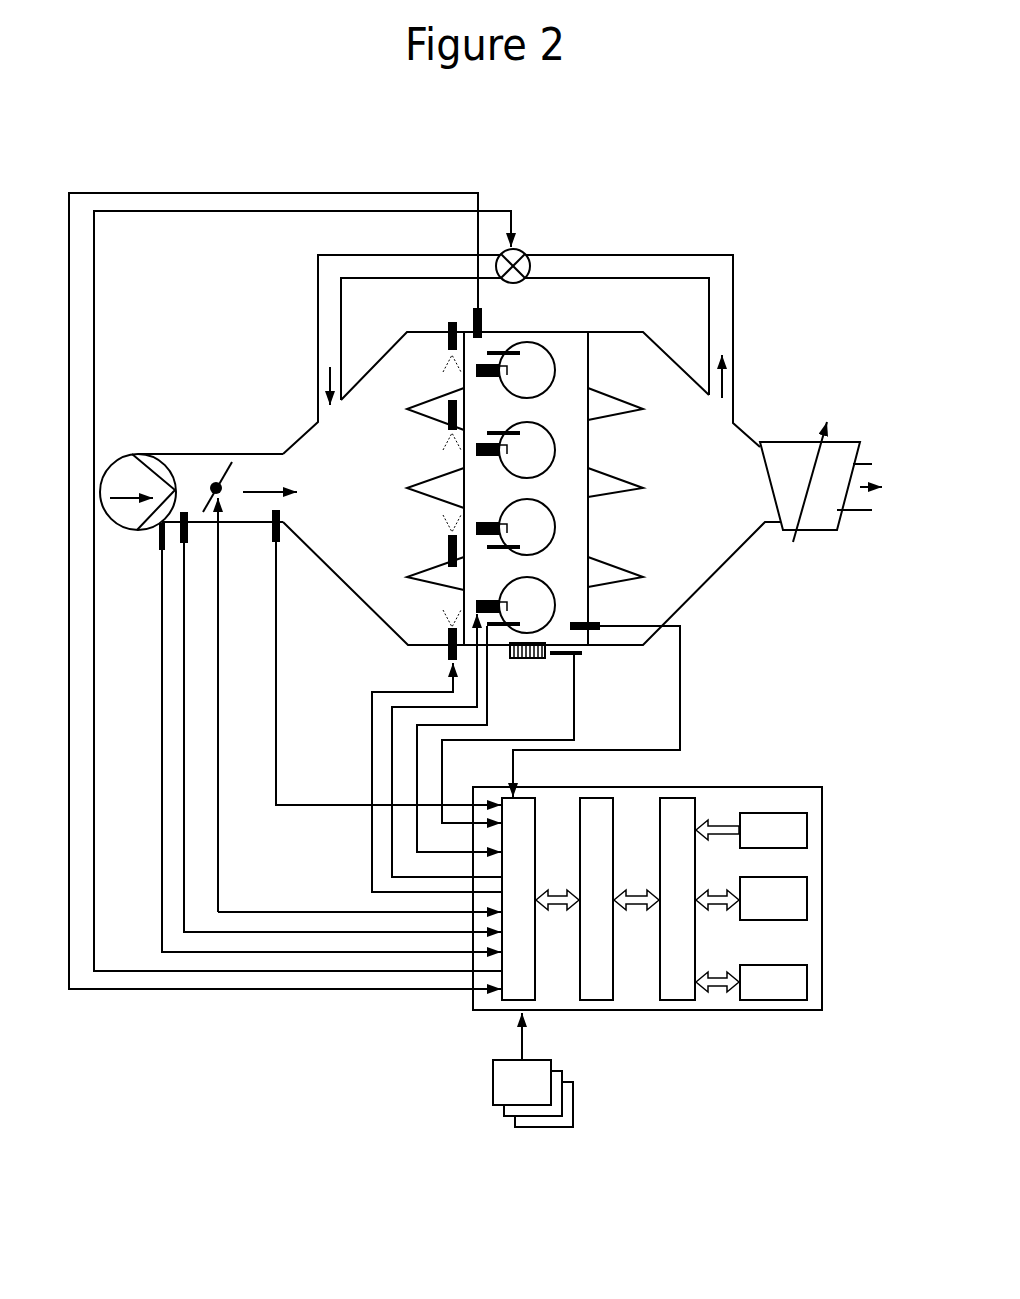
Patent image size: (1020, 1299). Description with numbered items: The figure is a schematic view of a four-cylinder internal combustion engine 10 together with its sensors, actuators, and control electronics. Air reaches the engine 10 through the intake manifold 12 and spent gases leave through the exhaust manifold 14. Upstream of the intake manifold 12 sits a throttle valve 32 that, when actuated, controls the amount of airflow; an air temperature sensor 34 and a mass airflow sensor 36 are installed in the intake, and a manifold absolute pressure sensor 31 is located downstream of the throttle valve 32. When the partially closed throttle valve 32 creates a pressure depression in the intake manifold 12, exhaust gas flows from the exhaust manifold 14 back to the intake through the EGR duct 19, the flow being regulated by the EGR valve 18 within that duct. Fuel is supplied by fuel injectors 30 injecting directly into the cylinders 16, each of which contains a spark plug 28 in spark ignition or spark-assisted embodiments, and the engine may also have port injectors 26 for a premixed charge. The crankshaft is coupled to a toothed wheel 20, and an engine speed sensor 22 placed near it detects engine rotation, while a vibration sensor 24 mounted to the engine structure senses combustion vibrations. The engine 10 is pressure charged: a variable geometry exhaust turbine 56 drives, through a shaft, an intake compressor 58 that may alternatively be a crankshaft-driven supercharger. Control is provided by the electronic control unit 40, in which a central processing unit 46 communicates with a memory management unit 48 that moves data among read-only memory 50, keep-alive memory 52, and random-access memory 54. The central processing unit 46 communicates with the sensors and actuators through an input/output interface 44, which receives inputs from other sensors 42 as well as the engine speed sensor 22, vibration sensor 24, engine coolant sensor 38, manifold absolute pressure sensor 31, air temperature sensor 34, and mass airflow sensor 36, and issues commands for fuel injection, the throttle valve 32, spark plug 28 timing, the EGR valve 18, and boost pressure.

The internal combustion engine 10 is at (548, 332).
The intake manifold 12 is at (392, 347).
The exhaust manifold 14 is at (668, 348).
The cylinder 16 is at (518, 345).
The EGR valve 18 is at (522, 250).
The exhaust gas recirculation (EGR) duct 19 is at (653, 255).
The toothed wheel 20 is at (523, 658).
The engine speed sensor 22 is at (578, 655).
The vibration sensor 24 is at (600, 626).
The port injector 26 is at (447, 650).
The spark plug 28 is at (477, 602).
The fuel injector 30 is at (495, 628).
The manifold absolute pressure (MAP) sensor 31 is at (280, 537).
The throttle valve 32 is at (227, 472).
The air temperature sensor 34 is at (157, 535).
The mass airflow sensor 36 is at (188, 535).
The engine coolant sensor 38 is at (473, 308).
The electronic control unit (ECU) 40 is at (565, 1010).
The other sensors 42 is at (537, 1127).
The input/output (I/O) interface 44 is at (527, 797).
The central processing unit (CPU) 46 is at (600, 797).
The memory management unit (MMU) 48 is at (670, 797).
The read-only memory (ROM) 50 is at (760, 813).
The keep-alive memory (KAM) 52 is at (807, 912).
The random-access memory (RAM) 54 is at (807, 988).
The exhaust turbine 56 is at (793, 440).
The intake compressor 58 is at (132, 453).